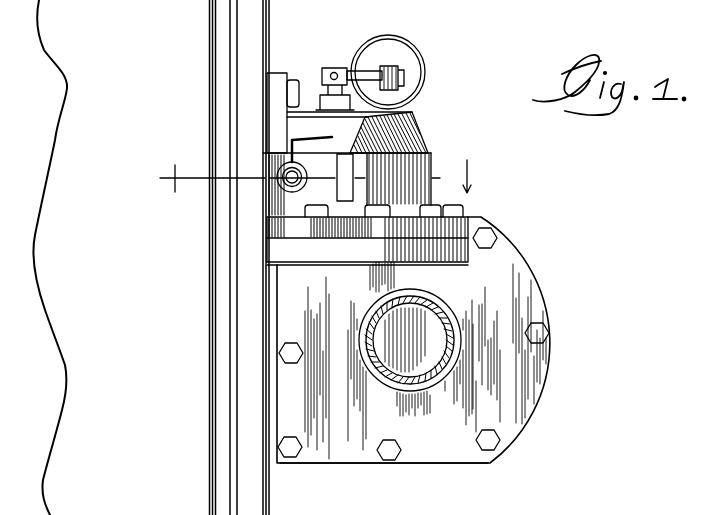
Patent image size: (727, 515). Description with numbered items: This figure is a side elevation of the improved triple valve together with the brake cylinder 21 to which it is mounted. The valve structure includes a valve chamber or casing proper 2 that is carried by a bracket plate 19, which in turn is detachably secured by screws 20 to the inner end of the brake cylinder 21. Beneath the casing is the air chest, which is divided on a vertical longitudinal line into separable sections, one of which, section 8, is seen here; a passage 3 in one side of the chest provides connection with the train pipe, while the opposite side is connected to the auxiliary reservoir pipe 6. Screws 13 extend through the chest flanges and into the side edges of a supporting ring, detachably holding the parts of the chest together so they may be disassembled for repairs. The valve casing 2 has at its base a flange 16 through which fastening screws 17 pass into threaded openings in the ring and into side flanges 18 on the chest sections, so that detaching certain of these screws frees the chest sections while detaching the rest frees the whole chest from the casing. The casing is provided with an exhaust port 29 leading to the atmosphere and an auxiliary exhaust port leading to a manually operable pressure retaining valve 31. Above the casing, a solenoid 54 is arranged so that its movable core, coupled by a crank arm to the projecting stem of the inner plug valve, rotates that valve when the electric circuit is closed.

The valve chamber or casing proper 2 is at (412, 132).
The passage 3 is at (319, 176).
The auxiliary reservoir pipe 6 is at (432, 388).
The separable section of the air chest 8 is at (458, 447).
The screws 13 is at (538, 337).
The flange 16 is at (340, 228).
The fastening screws 17 is at (429, 203).
The side flanges 18 is at (442, 262).
The bracket plate 19 is at (275, 118).
The screws 20 is at (299, 80).
The brake cylinder 21 is at (94, 257).
The exhaust port 29 is at (346, 202).
The manually operable pressure retaining valve 31 is at (305, 165).
The solenoid 54 is at (413, 65).